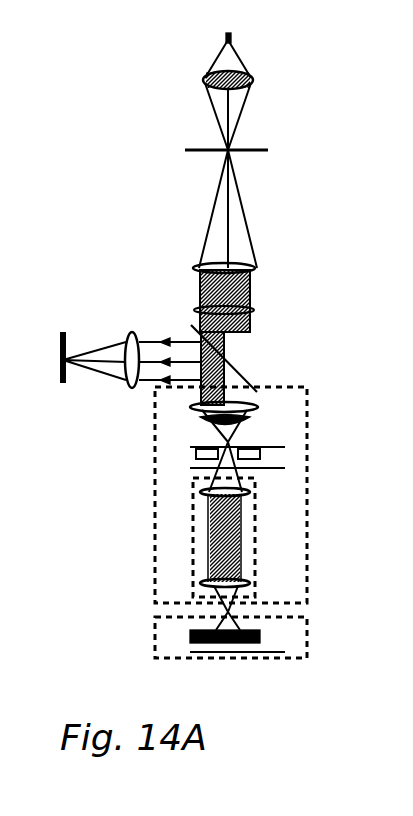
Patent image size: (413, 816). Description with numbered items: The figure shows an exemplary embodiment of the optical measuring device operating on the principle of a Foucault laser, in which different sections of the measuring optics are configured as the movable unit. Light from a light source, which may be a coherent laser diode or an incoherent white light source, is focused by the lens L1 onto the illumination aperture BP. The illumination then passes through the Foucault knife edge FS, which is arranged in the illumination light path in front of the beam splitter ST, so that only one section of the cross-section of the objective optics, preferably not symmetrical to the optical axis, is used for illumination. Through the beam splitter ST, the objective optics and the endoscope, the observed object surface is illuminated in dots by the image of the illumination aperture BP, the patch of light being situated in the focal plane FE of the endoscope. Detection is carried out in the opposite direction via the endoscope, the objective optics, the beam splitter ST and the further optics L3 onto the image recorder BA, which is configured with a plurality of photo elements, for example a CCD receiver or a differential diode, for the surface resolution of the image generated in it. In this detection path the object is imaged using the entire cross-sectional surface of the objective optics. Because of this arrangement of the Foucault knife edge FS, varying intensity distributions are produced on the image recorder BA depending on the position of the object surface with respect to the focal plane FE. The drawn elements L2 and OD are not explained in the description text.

The lens L1 is at (250, 80).
The illumination aperture BP is at (241, 150).
The second lens L2 is at (258, 264).
The Foucault knife edge FS is at (226, 330).
The further optics L3 is at (141, 325).
The image recorder BA is at (72, 379).
The beam splitter ST is at (231, 486).
The objective (optical device) OD is at (244, 446).
The focal plane FE is at (262, 630).